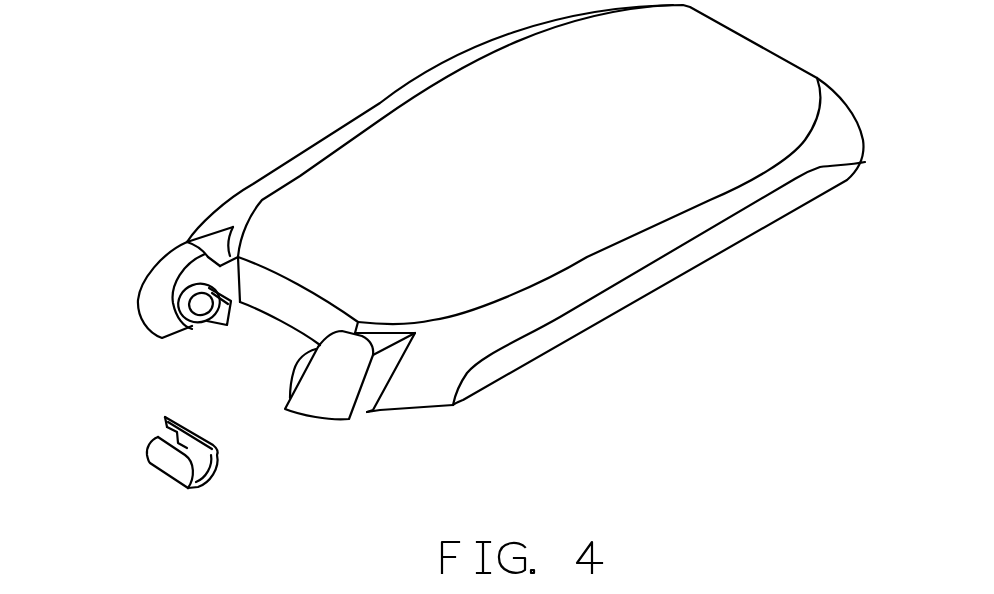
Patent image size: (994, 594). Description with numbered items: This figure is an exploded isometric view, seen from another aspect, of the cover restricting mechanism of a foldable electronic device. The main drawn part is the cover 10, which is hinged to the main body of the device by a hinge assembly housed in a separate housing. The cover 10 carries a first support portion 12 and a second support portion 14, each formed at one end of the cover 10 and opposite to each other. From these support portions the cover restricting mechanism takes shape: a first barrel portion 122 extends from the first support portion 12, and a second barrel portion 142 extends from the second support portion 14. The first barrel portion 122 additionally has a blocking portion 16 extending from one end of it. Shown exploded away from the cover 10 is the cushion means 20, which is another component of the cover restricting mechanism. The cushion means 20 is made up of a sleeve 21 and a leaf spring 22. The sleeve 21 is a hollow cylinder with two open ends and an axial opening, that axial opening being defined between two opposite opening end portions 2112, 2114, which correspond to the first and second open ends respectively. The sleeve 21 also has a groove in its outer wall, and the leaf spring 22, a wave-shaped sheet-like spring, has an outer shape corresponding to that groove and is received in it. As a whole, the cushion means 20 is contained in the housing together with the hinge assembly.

The cover 10 is at (397, 163).
The first support portion 12 is at (172, 277).
The first barrel portion 122 is at (184, 302).
The blocking portion 16 is at (228, 322).
The second support portion 14 is at (333, 393).
The second barrel portion 142 is at (295, 361).
The cushion means 20 is at (176, 445).
The sleeve 21 is at (165, 457).
The leaf spring 22 is at (165, 425).
The opening end portion 2112 is at (202, 437).
The opening end portion 2114 is at (215, 466).